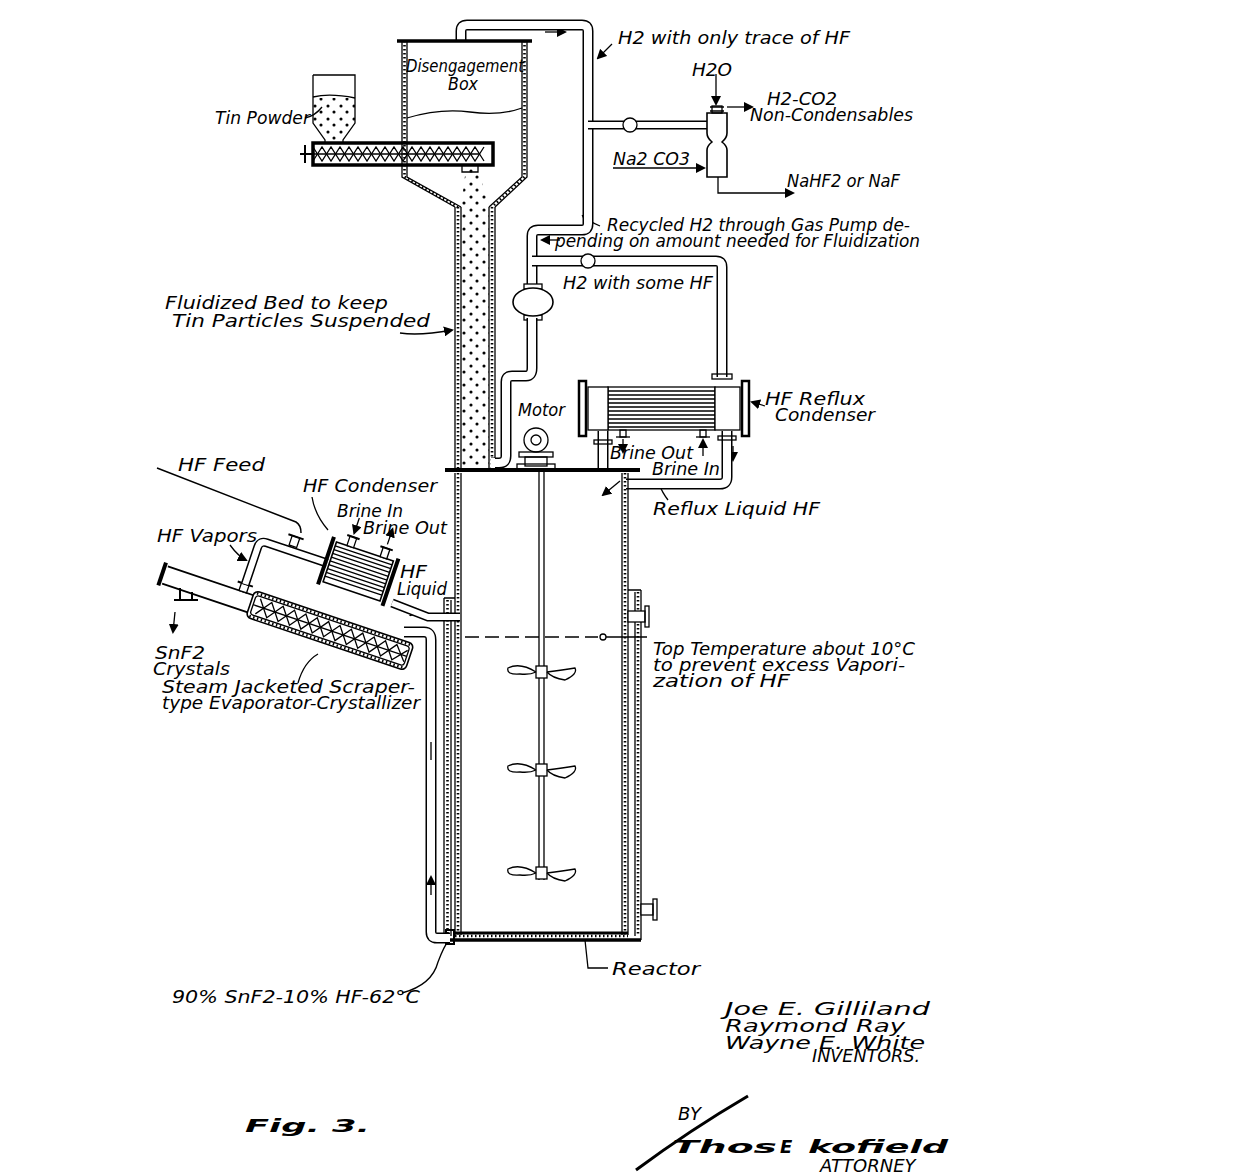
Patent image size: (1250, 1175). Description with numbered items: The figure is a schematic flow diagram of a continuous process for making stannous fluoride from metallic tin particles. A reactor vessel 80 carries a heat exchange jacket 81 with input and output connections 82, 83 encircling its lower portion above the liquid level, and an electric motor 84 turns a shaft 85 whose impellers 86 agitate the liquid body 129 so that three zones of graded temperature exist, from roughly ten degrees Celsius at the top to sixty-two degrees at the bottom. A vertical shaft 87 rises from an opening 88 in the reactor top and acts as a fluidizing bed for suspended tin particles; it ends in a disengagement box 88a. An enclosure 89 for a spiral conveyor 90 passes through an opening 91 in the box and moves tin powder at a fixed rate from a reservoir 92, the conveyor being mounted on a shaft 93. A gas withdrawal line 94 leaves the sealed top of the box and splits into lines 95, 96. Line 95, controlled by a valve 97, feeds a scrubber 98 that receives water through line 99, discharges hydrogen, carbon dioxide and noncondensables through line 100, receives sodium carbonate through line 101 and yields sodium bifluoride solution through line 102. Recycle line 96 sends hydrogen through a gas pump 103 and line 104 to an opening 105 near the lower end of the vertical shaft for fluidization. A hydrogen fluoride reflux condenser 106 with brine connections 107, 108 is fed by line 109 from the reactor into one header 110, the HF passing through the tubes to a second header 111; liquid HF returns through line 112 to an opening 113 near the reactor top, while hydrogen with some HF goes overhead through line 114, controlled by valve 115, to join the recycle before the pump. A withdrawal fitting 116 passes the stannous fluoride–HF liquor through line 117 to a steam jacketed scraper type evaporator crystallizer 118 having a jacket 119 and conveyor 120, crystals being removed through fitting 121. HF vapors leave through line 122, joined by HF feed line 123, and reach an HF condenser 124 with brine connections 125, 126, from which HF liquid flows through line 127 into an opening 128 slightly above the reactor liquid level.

The reactor vessel 80 is at (541, 940).
The heat exchange jacket 81 is at (643, 782).
The input connection 82 is at (650, 612).
The output connection 83 is at (652, 905).
The electric motor 84 is at (550, 452).
The shaft 85 is at (545, 570).
The impellers 86 is at (548, 677).
The vertical shaft 87 is at (455, 399).
The opening 88 is at (484, 478).
The disengagement box 88a is at (528, 135).
The enclosure 89 is at (350, 166).
The spiral conveyor 90 is at (372, 165).
The opening 91 is at (404, 140).
The reservoir 92 is at (324, 87).
The shaft 93 is at (300, 154).
The gas withdrawal line 94 is at (547, 28).
The line 95 is at (604, 122).
The recycle line 96 is at (583, 166).
The valve 97 is at (640, 122).
The scrubber 98 is at (728, 142).
The line 99 is at (714, 86).
The line 100 is at (740, 105).
The line 101 is at (655, 170).
The line 102 is at (745, 192).
The gas pump 103 is at (546, 307).
The line 104 is at (538, 351).
The opening 105 is at (463, 455).
The hydrogen fluoride reflux condenser 106 is at (666, 388).
The brine input connection 107 is at (628, 436).
The brine output connection 108 is at (698, 436).
The line 109 is at (600, 478).
The header 110 is at (600, 396).
The second header 111 is at (748, 386).
The line 112 is at (733, 476).
The opening 113 is at (615, 487).
The line 114 is at (729, 329).
The valve 115 is at (580, 266).
The withdrawal fitting 116 is at (461, 939).
The line 117 is at (427, 728).
The evaporator crystallizer 118 is at (257, 607).
The jacket 119 is at (262, 594).
The conveyor 120 is at (300, 641).
The fitting 121 is at (186, 600).
The line 122 is at (300, 528).
The HF feed line 123 is at (258, 500).
The HF condenser 124 is at (346, 588).
The brine connection 125 is at (353, 540).
The brine connection 126 is at (396, 553).
The line 127 is at (411, 612).
The opening 128 is at (460, 622).
The liquid body 129 is at (576, 636).